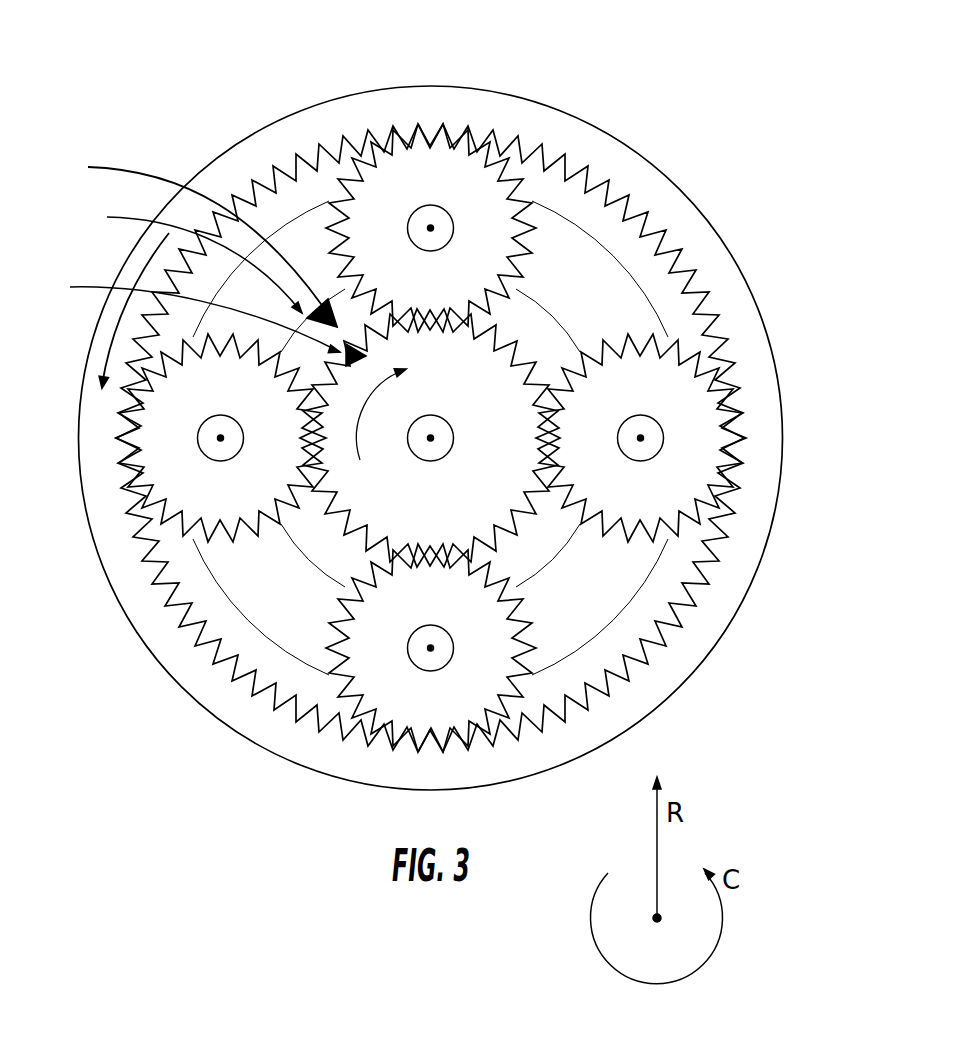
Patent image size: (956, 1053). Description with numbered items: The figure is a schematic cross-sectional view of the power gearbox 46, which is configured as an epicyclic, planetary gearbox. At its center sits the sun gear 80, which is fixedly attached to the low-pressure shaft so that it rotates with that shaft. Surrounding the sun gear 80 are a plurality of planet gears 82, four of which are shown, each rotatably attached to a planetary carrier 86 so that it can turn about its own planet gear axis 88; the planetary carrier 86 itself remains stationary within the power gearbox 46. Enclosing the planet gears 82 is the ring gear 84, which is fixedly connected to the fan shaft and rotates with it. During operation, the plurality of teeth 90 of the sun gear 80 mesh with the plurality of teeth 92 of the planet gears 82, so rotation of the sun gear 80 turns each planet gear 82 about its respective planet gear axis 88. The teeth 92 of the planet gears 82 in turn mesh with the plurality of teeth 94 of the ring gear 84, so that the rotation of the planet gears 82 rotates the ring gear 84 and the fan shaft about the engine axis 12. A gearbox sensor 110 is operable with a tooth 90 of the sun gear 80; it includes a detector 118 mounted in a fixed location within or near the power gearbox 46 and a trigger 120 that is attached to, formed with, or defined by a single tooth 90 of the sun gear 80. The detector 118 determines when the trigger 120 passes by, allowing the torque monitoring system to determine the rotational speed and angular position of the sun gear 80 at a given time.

The engine axis 12 is at (430, 438).
The power gearbox 46 is at (435, 419).
The sun gear 80 is at (416, 456).
The planet gears 82 is at (478, 148).
The ring gear 84 is at (275, 138).
The planetary carrier 86 is at (620, 290).
The planet gear axis 88 is at (430, 226).
The teeth of the sun gear 90 is at (335, 508).
The teeth of the planet gears 92 is at (490, 287).
The teeth of the ring gear 94 is at (245, 195).
The gearbox sensor 110 is at (183, 257).
The detector 118 is at (191, 269).
The trigger 120 is at (199, 318).